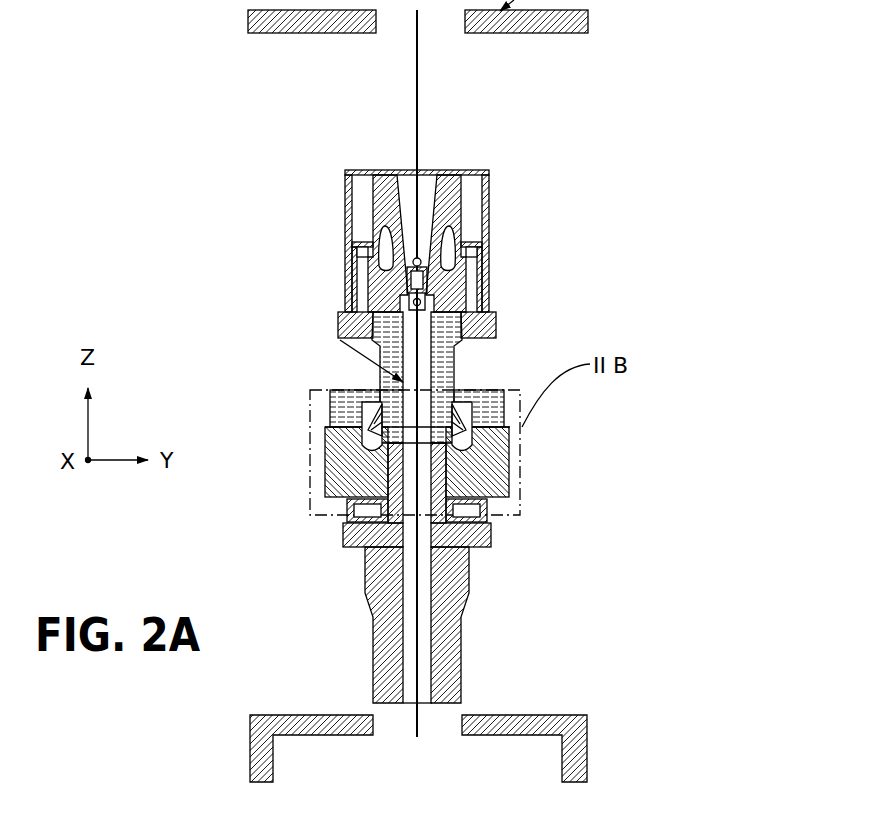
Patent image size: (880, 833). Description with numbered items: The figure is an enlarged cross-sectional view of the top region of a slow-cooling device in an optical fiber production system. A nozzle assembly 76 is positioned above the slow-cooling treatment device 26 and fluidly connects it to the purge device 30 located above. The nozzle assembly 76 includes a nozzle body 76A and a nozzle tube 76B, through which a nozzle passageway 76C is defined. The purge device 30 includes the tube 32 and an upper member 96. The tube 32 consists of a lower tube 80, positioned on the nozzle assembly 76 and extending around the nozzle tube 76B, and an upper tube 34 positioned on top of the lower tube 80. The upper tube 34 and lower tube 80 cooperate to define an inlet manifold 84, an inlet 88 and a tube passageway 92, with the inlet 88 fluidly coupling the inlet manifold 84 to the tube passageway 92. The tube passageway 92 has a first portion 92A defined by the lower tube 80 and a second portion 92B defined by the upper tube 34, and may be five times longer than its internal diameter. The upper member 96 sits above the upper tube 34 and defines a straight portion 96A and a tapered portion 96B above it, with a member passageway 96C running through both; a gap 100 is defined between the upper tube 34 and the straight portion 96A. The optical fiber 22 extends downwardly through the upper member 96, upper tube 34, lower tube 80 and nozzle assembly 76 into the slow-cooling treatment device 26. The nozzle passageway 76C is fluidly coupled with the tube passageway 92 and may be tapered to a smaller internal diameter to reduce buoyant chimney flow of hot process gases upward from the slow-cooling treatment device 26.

The optical fiber 22 is at (420, 71).
The slow-cooling treatment device 26 is at (587, 722).
The purge device 30 is at (582, 413).
The tube 32 is at (525, 375).
The upper tube 34 is at (462, 360).
The nozzle assembly 76 is at (550, 490).
The nozzle body 76A is at (368, 578).
The nozzle tube 76B is at (387, 474).
The nozzle passageway 76C is at (482, 530).
The lower tube 80 is at (490, 458).
The inlet manifold 84 is at (455, 410).
The inlet 88 is at (377, 390).
The tube passageway 92 is at (380, 390).
The first portion 92A is at (365, 436).
The second portion 92B is at (380, 340).
The upper member 96 is at (343, 228).
The straight portion 96A is at (458, 268).
The tapered portion 96B is at (448, 220).
The member passageway 96C is at (425, 205).
The gap 100 is at (447, 308).